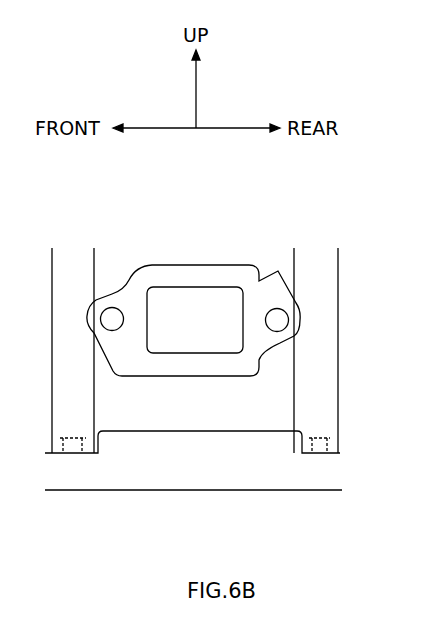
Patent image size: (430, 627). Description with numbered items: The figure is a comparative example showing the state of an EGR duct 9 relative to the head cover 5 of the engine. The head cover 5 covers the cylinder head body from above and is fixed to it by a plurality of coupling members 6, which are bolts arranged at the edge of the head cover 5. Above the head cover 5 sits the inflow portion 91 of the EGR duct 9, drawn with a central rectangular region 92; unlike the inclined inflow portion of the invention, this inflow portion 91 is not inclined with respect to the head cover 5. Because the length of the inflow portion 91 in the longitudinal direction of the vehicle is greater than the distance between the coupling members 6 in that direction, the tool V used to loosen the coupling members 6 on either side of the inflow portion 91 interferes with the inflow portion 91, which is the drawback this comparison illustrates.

The head cover 5 is at (123, 462).
The coupling members 6 is at (53, 443).
The EGR duct 9 is at (193, 282).
The inflow portion 91 is at (161, 275).
The opening 92 is at (197, 287).
The tool V is at (75, 268).